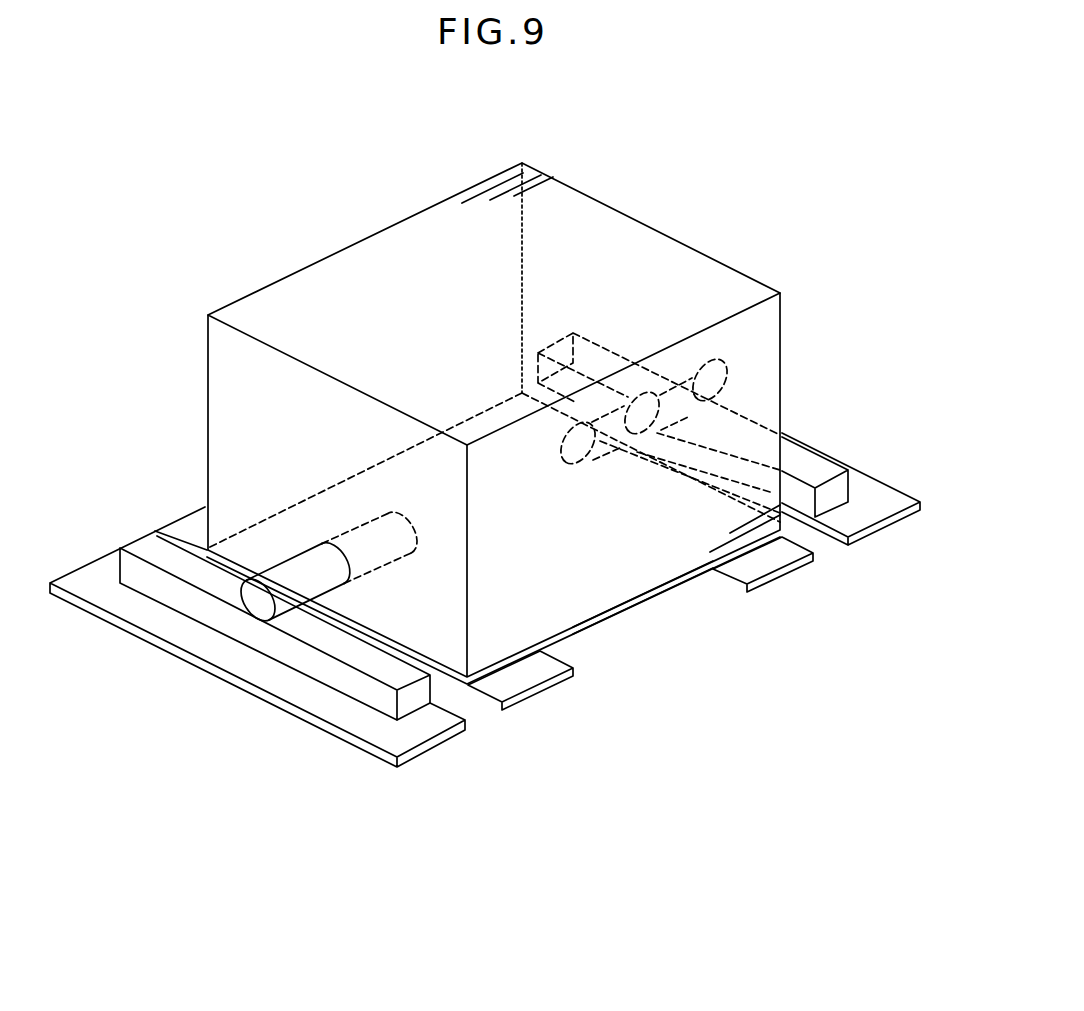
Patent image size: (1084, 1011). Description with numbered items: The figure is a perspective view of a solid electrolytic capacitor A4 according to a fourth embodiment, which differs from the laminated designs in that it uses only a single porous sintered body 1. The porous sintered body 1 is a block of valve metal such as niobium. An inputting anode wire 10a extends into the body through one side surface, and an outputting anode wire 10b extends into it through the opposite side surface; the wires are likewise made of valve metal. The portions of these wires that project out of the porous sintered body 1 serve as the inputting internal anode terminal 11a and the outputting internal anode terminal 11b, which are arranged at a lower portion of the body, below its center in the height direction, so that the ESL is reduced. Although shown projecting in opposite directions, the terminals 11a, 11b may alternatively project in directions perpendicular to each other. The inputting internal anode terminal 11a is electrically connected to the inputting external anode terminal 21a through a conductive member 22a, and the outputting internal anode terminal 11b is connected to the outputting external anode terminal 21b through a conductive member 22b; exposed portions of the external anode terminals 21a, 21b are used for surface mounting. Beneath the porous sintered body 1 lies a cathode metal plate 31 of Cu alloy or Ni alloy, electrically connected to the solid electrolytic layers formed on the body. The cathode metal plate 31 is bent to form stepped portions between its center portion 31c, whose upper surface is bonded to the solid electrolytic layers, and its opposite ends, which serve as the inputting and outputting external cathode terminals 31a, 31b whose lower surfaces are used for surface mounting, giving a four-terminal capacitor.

The solid electrolytic capacitor A4 is at (306, 197).
The porous sintered body 1 is at (647, 252).
The inputting anode wire 10a is at (373, 542).
The inputting internal anode terminal 11a is at (257, 603).
The outputting anode wire 10b is at (614, 448).
The outputting internal anode terminal 11b is at (713, 383).
The inputting external anode terminal 21a is at (385, 732).
The conductive member 22a is at (367, 688).
The outputting external anode terminal 21b is at (870, 508).
The conductive member 22b is at (822, 472).
The cathode metal plate 31 is at (675, 583).
The inputting external cathode terminal 31a is at (770, 557).
The outputting external cathode terminal 31b is at (520, 680).
The center portion 31c is at (610, 617).